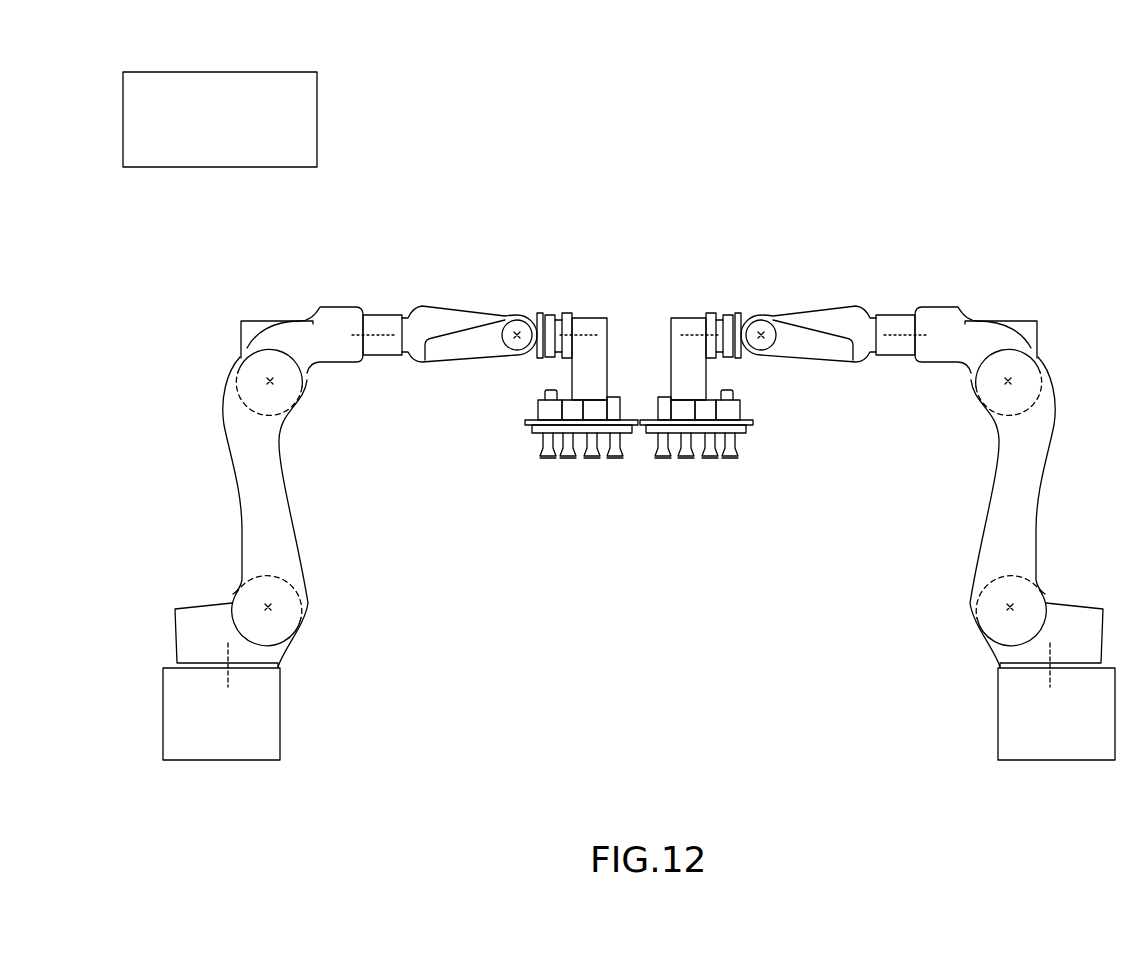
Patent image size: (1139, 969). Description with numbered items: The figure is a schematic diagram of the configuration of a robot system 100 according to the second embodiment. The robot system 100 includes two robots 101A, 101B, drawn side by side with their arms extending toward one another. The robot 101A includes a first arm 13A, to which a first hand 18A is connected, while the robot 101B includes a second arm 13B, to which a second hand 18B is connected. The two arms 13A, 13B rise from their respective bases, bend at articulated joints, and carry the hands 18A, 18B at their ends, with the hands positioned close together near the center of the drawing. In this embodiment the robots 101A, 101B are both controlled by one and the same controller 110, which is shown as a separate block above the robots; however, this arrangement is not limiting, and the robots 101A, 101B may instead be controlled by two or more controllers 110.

The robot system 100 is at (662, 44).
The controller 110 is at (317, 117).
The robot 101A is at (415, 286).
The robot 101B is at (908, 286).
The first arm 13A is at (313, 473).
The second arm 13B is at (958, 515).
The first hand 18A is at (578, 479).
The second hand 18B is at (699, 473).